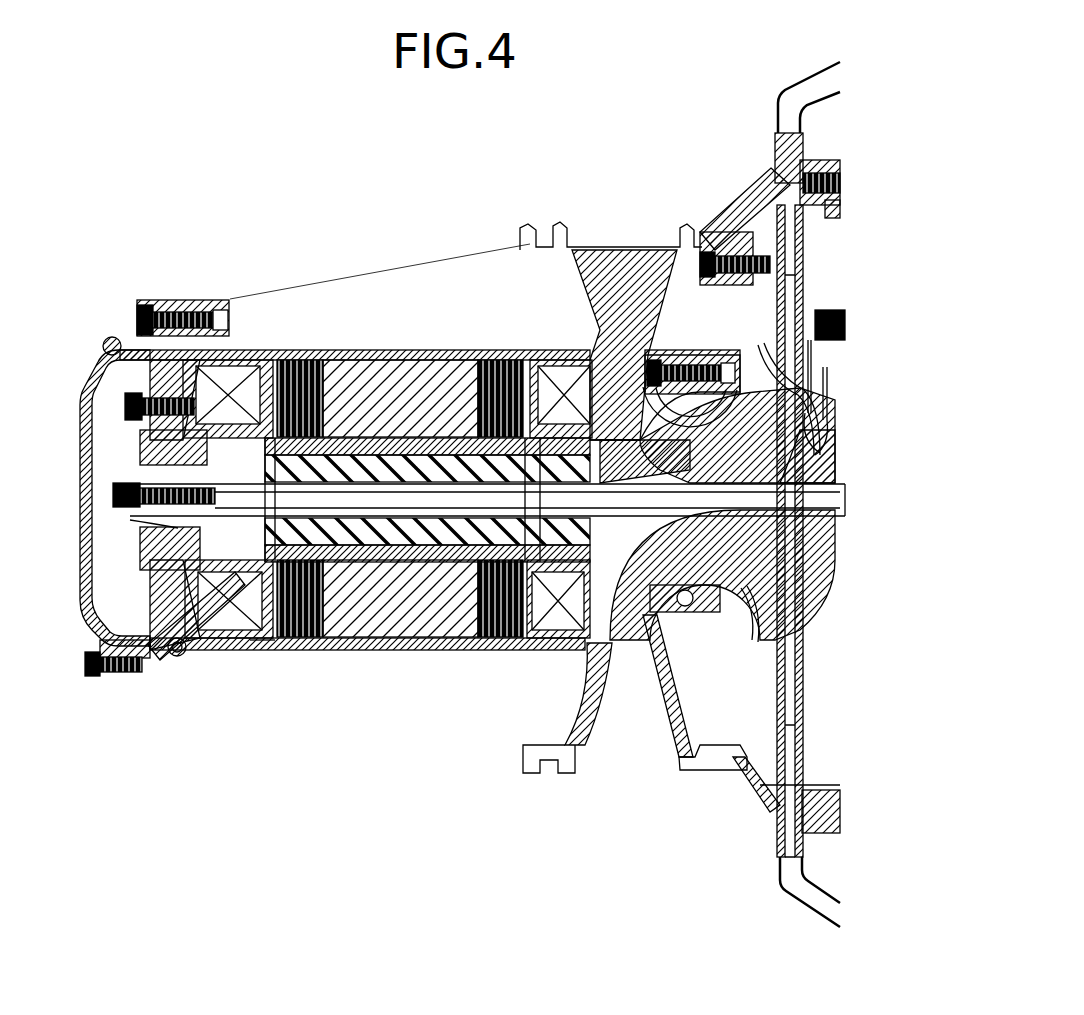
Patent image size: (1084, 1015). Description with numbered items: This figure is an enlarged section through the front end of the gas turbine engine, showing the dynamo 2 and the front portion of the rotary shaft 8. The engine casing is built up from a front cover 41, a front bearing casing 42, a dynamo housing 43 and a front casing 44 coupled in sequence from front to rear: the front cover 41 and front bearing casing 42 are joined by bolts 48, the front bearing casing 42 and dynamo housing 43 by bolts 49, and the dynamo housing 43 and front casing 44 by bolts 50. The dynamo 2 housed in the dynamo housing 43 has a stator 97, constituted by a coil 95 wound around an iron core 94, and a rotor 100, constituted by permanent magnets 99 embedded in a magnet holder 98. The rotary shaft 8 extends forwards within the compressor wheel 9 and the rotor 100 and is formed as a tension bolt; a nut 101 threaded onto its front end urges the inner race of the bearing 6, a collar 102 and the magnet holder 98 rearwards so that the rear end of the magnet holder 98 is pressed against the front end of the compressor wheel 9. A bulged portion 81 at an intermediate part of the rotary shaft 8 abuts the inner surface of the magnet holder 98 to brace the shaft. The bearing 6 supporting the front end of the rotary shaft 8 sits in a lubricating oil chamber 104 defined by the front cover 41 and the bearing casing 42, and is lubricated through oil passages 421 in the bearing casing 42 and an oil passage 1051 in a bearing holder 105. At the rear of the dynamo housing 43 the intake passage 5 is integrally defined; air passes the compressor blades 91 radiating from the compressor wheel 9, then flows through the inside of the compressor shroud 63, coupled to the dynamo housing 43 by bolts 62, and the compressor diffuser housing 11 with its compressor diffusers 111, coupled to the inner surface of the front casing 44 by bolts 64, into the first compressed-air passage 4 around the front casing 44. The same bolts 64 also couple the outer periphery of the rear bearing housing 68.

The dynamo 2 is at (356, 650).
The first compressed-air passage 4 is at (790, 100).
The intake passage 5 is at (618, 645).
The bearing 6 is at (140, 542).
The rotary shaft 8 is at (642, 535).
The centrifugal compressor wheel 9 is at (832, 444).
The compressor diffuser housing 11 is at (796, 531).
The front cover 41 is at (88, 370).
The front bearing casing 42 is at (155, 665).
The dynamo housing 43 is at (464, 236).
The front casing 44 is at (775, 160).
The bolts 48 is at (92, 676).
The bolts 49 is at (150, 300).
The bolts 50 is at (770, 265).
The bolts 62 is at (720, 347).
The compressor shroud 63 is at (700, 610).
The bolts 64 is at (835, 185).
The rear bearing housing 68 is at (840, 208).
The bulged portion 81 is at (612, 456).
The compressor blades 91 is at (742, 612).
The iron core 94 is at (358, 350).
The coil 95 is at (364, 242).
The stator 97 is at (390, 419).
The magnet holder 98 is at (427, 515).
The permanent magnets 99 is at (340, 590).
The rotor 100 is at (427, 536).
The nut 101 is at (130, 520).
The collar 102 is at (262, 648).
The lubricating oil chamber 104 is at (123, 645).
The bearing holder 105 is at (200, 636).
The compressor diffusers 111 is at (777, 702).
The oil passages 421 is at (150, 440).
The oil passage 1051 is at (479, 499).